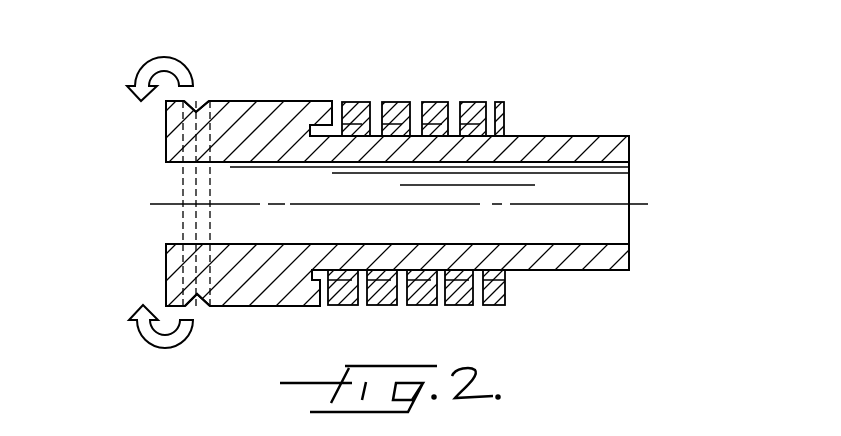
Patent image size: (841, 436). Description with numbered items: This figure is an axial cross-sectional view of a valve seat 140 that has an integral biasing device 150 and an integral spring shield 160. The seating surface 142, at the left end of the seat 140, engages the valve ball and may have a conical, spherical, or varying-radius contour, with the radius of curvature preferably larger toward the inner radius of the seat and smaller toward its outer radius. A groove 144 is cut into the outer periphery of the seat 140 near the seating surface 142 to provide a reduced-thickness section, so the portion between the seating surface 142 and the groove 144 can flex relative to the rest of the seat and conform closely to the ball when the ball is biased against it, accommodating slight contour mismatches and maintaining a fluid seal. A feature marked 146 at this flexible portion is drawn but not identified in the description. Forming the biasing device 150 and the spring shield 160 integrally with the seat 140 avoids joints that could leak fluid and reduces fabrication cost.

The valve seat 140 is at (247, 121).
The seating surface 142 is at (180, 275).
The groove 144 is at (194, 108).
The rotation direction arrow 146 is at (160, 58).
The biasing device 150 is at (432, 103).
The spring shield 160 is at (582, 142).